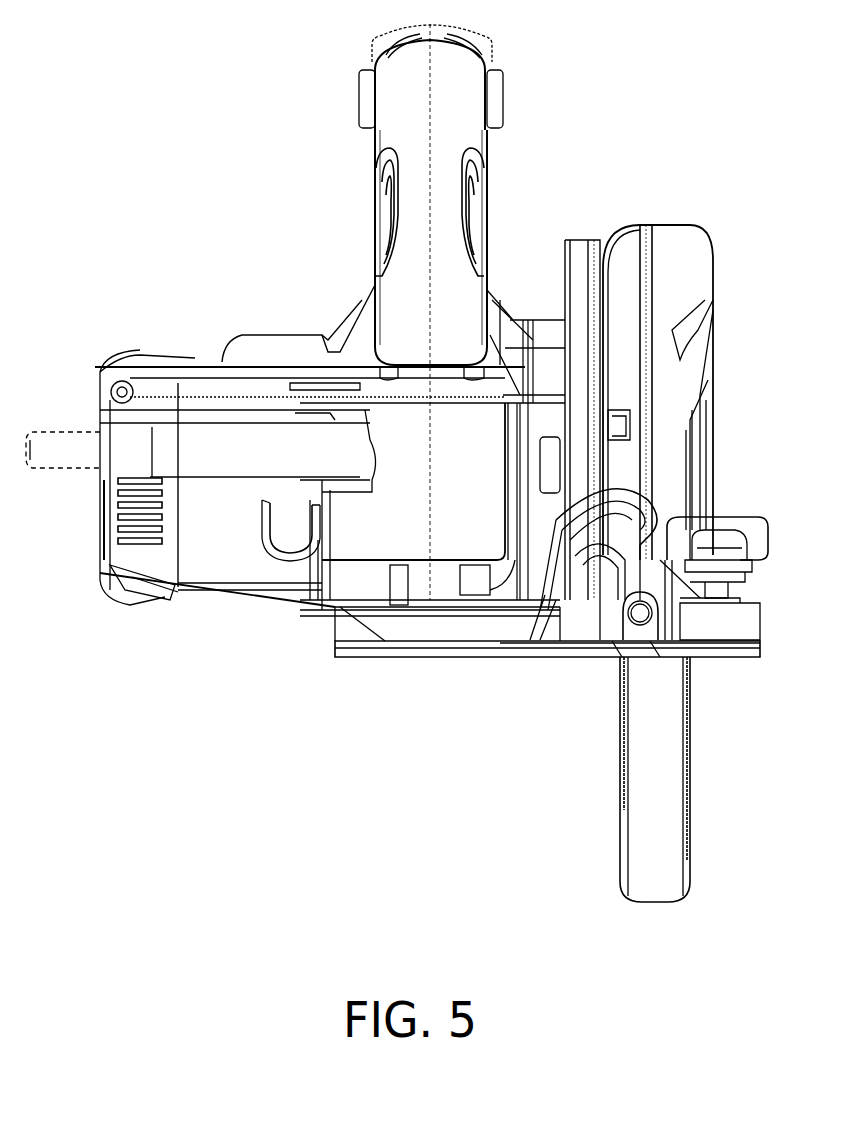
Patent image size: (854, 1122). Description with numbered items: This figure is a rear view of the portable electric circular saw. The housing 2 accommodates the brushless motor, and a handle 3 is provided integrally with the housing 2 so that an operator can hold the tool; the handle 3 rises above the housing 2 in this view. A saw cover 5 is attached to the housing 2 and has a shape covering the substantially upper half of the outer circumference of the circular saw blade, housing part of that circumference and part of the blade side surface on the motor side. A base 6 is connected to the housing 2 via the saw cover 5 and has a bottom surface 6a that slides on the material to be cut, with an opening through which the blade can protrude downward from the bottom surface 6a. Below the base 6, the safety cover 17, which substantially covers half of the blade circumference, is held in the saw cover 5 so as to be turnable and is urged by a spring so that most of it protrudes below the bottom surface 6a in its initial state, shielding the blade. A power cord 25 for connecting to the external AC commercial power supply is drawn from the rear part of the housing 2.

The housing 2 is at (280, 335).
The handle 3 is at (470, 70).
The saw cover 5 is at (687, 227).
The base 6 is at (360, 658).
The bottom surface 6a is at (532, 658).
The safety cover 17 is at (620, 872).
The power cord 25 is at (56, 432).